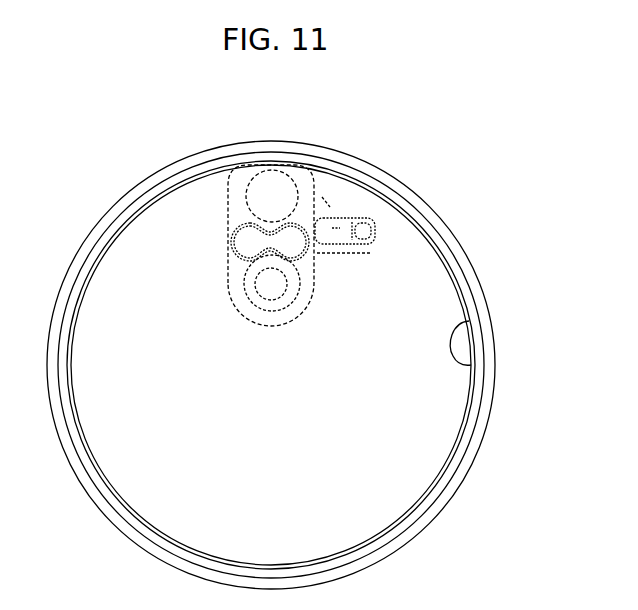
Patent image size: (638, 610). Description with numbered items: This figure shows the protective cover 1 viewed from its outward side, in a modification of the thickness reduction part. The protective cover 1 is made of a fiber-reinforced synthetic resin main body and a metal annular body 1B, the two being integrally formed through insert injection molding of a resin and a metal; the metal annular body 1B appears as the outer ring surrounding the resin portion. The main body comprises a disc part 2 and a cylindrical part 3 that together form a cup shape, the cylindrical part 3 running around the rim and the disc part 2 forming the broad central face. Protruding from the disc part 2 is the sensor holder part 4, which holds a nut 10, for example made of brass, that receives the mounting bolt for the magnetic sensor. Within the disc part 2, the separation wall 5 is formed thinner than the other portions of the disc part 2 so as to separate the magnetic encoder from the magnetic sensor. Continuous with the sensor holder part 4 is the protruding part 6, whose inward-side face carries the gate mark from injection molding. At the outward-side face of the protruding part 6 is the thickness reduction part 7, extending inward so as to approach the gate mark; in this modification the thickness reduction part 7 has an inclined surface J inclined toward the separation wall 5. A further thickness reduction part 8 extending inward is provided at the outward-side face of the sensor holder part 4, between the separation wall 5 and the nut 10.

The protective cover 1 is at (472, 242).
The disc part 2 is at (358, 433).
The cylindrical part 3 is at (498, 404).
The sensor holder part 4 is at (304, 314).
The separation wall 5 is at (264, 187).
The protruding part 6 is at (356, 254).
The thickness reduction part 7 is at (377, 232).
The thickness reduction part 8 is at (233, 240).
The nut 10 is at (237, 310).
The metal annular body 1B is at (470, 317).
The inclined surface J is at (332, 228).